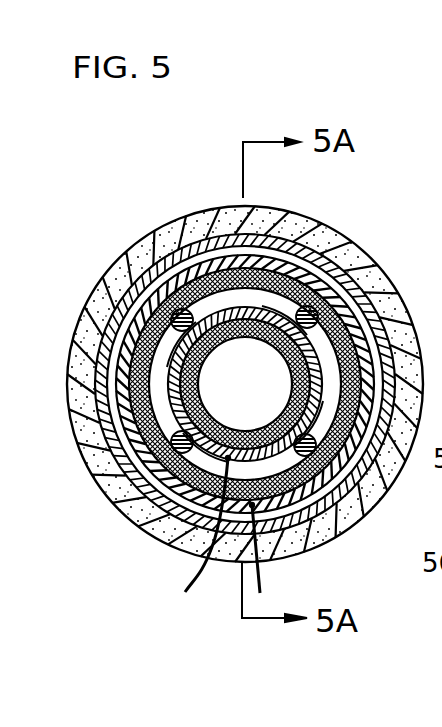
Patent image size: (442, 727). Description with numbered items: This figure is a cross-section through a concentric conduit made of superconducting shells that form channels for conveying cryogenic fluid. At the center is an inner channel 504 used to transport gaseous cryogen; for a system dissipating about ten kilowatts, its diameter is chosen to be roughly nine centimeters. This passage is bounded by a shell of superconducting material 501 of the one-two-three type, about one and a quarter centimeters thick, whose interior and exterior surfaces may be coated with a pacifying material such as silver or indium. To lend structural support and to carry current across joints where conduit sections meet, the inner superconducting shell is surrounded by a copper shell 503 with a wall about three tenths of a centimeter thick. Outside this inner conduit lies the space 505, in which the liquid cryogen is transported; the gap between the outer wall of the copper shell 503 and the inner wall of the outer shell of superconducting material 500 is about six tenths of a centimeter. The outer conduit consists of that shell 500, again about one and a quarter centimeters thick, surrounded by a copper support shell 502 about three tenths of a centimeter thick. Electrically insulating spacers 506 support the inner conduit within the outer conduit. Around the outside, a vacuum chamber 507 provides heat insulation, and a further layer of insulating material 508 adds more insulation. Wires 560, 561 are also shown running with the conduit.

The outer shell of superconducting material 500 is at (125, 262).
The shell of superconducting material 501 is at (132, 515).
The copper support shell 502 is at (177, 273).
The copper shell 503 is at (317, 362).
The inner channel 504 is at (252, 347).
The space 505 is at (320, 430).
The electrically insulating spacers 506 is at (330, 305).
The vacuum chamber 507 is at (305, 260).
The layer of insulating material 508 is at (293, 215).
The wire 560 is at (263, 575).
The wire 561 is at (195, 572).